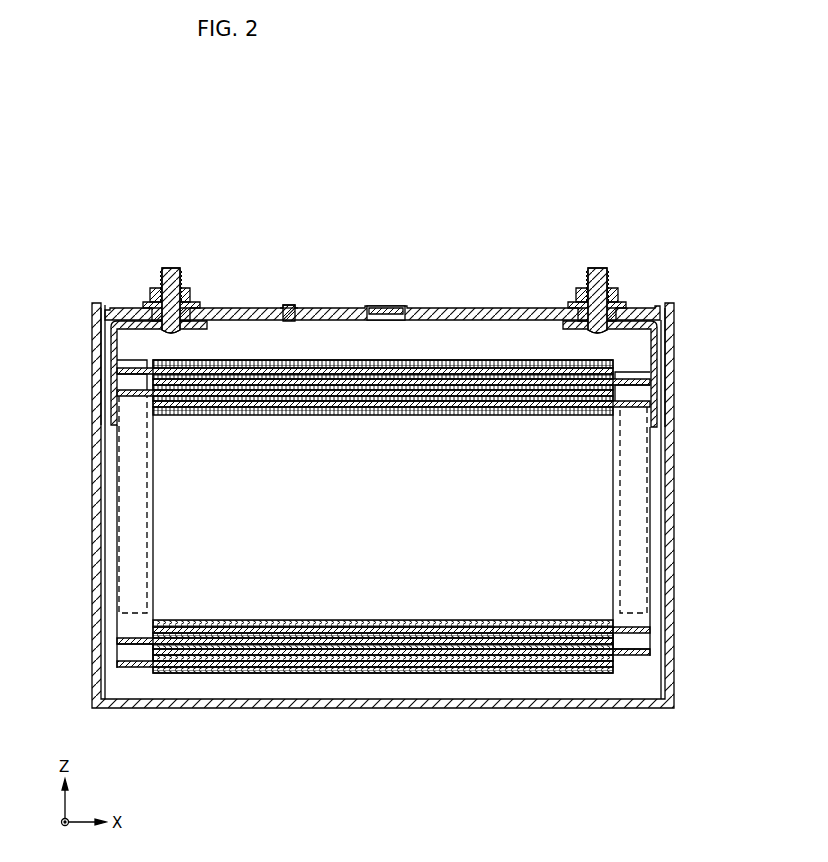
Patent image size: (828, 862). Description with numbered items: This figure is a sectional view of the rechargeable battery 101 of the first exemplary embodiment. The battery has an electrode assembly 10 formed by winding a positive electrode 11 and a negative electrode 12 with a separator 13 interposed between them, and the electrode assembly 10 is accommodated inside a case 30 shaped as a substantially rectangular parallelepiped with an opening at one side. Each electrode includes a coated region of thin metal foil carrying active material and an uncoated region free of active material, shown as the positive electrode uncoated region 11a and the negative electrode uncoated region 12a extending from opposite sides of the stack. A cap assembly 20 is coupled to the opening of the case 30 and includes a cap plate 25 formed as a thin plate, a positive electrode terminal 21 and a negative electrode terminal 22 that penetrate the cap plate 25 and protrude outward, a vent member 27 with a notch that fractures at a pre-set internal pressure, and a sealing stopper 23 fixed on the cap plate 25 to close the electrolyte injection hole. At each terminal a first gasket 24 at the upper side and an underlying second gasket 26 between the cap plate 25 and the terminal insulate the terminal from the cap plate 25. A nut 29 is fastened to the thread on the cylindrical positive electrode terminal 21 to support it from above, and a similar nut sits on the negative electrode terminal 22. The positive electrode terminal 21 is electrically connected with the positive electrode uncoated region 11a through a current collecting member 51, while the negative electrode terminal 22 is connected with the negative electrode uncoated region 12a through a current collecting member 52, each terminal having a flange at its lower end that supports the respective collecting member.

The electric storage device 101 is at (404, 159).
The electrode assembly 10 is at (384, 561).
The positive electrode 11 is at (233, 662).
The positive electrode uncoated region 11a is at (133, 668).
The negative electrode 12 is at (293, 657).
The negative electrode uncoated region 12a is at (632, 655).
The separator 13 is at (340, 668).
The cap assembly 20 is at (361, 436).
The positive electrode terminal 21 is at (166, 267).
The negative electrode terminal 22 is at (597, 267).
The sealing stopper 23 is at (288, 305).
The first gasket 24 is at (135, 304).
The cap plate 25 is at (485, 307).
The second gasket 26 is at (125, 316).
The vent member 27 is at (375, 306).
The nut 29 is at (156, 290).
The case 30 is at (535, 703).
The current collecting member 51 is at (106, 350).
The current collecting member 52 is at (657, 355).